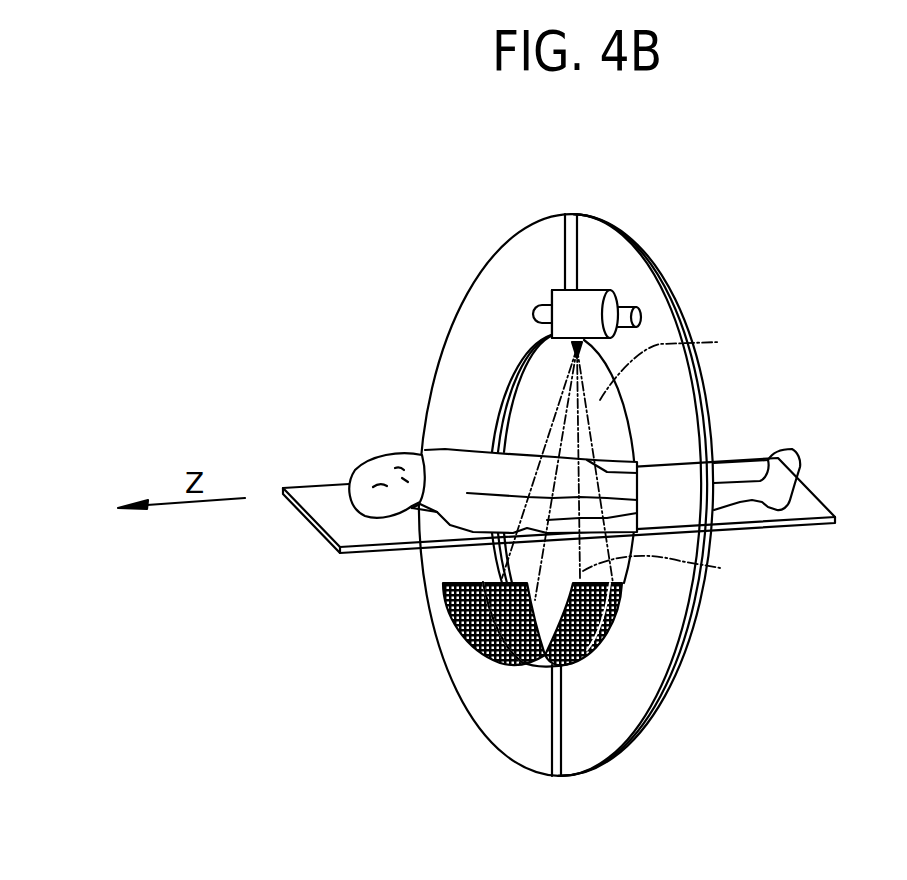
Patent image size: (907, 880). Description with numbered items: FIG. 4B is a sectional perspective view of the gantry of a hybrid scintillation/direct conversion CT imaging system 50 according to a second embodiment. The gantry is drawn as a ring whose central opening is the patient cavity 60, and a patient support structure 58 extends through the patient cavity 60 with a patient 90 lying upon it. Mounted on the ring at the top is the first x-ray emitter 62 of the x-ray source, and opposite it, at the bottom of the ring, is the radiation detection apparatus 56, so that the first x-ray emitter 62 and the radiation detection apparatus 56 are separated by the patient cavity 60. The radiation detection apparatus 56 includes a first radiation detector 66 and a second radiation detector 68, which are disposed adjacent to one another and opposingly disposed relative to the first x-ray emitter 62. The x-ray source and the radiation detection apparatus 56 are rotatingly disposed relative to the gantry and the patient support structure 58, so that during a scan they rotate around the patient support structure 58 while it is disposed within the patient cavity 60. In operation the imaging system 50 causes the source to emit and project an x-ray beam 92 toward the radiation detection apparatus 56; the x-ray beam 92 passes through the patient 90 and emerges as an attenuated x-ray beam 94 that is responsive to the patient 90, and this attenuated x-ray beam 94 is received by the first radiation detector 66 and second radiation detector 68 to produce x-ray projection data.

The hybrid scintillation/direct conversion CT imaging system 50 is at (633, 155).
The radiation detection apparatus 56 is at (588, 648).
The patient support structure 58 is at (805, 507).
The patient cavity 60 is at (515, 380).
The first x-ray emitter 62 is at (593, 291).
The first radiation detector 66 is at (445, 596).
The second radiation detector 68 is at (476, 657).
The patient 90 is at (795, 457).
The x-ray beam 92 is at (720, 342).
The attenuated x-ray beam 94 is at (720, 568).